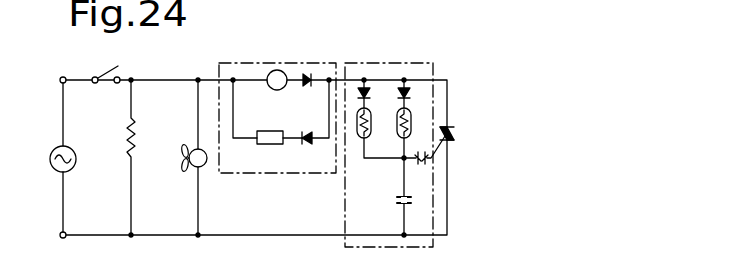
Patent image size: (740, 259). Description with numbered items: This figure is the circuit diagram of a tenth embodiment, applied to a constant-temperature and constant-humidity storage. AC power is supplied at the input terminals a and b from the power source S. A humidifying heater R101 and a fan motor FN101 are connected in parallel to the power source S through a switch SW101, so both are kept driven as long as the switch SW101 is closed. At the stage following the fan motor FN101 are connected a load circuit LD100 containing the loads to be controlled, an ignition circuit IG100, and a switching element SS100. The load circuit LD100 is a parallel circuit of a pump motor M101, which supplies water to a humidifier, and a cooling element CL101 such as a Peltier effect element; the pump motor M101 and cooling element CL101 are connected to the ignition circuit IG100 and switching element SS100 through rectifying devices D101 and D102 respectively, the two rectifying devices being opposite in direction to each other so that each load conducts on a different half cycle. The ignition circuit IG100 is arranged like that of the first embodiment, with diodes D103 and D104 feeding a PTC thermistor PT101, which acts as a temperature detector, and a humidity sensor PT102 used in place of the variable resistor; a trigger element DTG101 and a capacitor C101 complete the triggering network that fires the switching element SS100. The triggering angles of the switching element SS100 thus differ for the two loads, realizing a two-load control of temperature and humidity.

The input terminal a is at (54, 75).
The input terminal b is at (54, 229).
The power source S is at (69, 149).
The switch SW101 is at (136, 64).
The humidifying heater R101 is at (151, 157).
The fan motor FN101 is at (172, 157).
The load circuit LD100 is at (241, 63).
The pump motor M101 is at (277, 95).
The rectifying device D101 is at (308, 76).
The cooling element CL101 is at (265, 146).
The rectifying device D102 is at (311, 153).
The ignition circuit IG100 is at (366, 63).
The diode D103 is at (372, 93).
The diode D104 is at (412, 98).
The humidity sensor PT102 is at (373, 113).
The PTC thermistor PT101 is at (412, 121).
The switching element SS100 is at (453, 139).
The diac trigger element DTG101 is at (420, 168).
The capacitor C101 is at (412, 201).